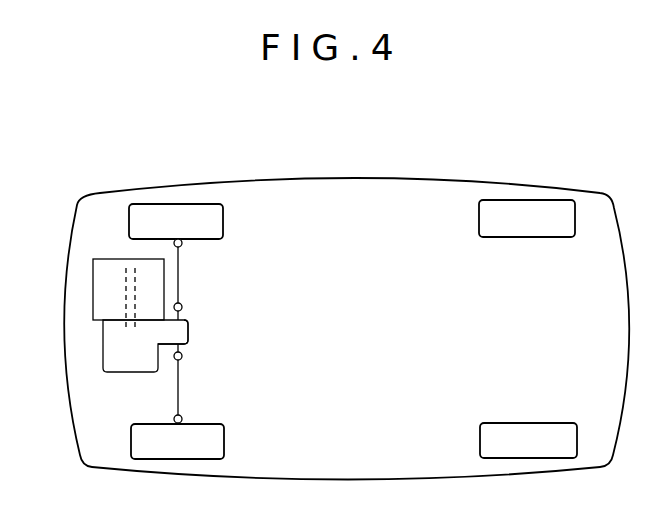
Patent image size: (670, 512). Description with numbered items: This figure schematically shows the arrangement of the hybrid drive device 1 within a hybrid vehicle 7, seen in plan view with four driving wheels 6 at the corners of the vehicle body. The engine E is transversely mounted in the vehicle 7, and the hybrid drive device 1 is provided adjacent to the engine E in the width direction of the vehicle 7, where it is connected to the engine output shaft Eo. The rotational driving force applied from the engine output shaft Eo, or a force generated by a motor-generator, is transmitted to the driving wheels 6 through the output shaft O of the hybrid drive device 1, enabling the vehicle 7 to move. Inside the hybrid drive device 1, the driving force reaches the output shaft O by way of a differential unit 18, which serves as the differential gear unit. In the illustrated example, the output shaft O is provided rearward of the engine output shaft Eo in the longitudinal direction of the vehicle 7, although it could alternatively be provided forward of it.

The vehicle 7 is at (101, 180).
The driving wheels 6 is at (195, 213).
The hybrid drive device 1 is at (120, 341).
The engine E is at (98, 310).
The engine output shaft Eo is at (127, 287).
The output shaft O is at (188, 313).
The differential unit 18 is at (183, 332).